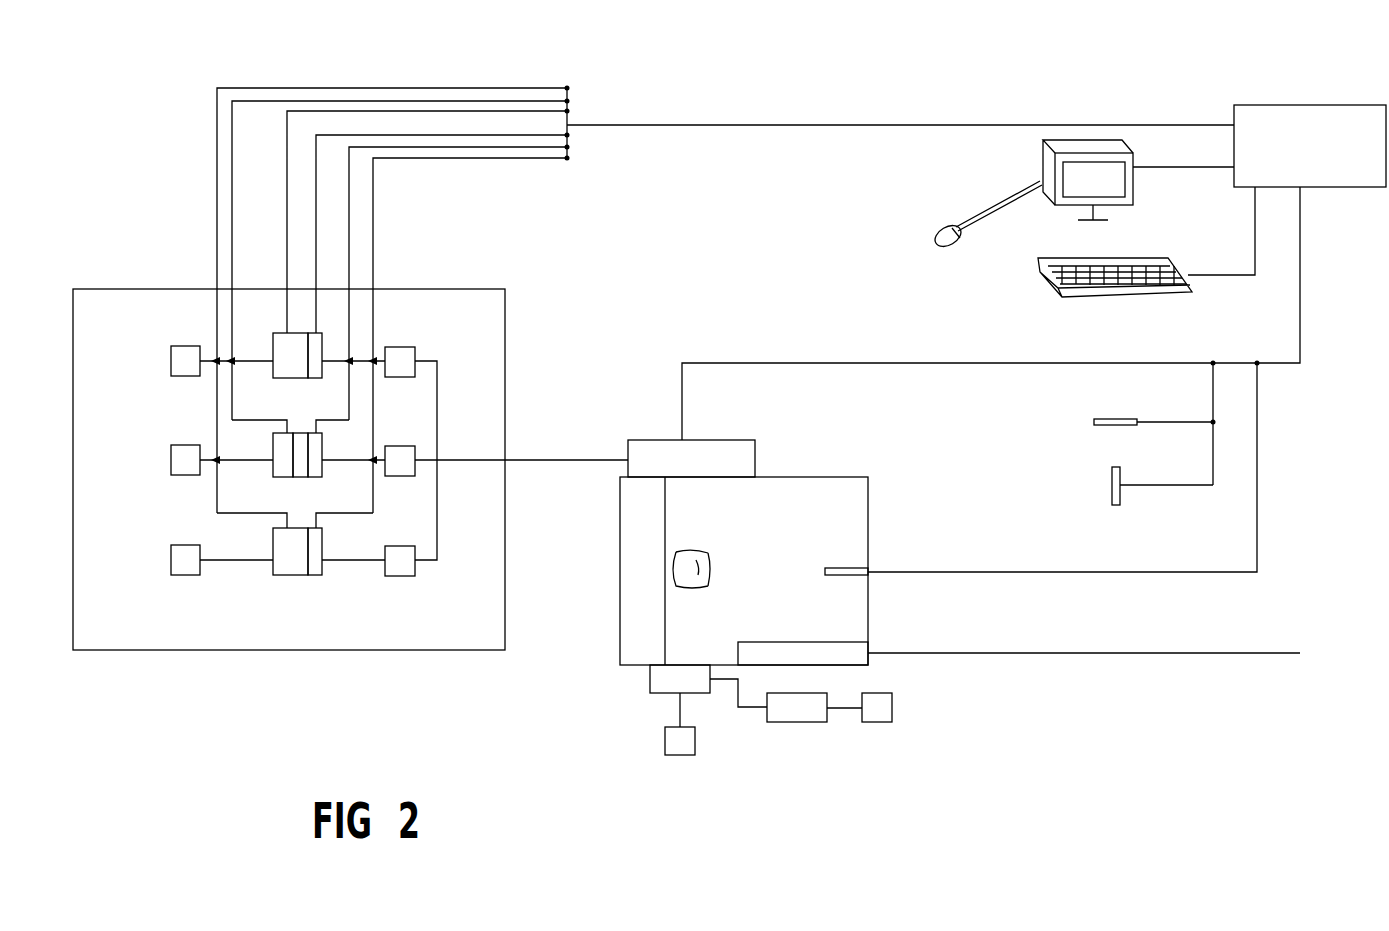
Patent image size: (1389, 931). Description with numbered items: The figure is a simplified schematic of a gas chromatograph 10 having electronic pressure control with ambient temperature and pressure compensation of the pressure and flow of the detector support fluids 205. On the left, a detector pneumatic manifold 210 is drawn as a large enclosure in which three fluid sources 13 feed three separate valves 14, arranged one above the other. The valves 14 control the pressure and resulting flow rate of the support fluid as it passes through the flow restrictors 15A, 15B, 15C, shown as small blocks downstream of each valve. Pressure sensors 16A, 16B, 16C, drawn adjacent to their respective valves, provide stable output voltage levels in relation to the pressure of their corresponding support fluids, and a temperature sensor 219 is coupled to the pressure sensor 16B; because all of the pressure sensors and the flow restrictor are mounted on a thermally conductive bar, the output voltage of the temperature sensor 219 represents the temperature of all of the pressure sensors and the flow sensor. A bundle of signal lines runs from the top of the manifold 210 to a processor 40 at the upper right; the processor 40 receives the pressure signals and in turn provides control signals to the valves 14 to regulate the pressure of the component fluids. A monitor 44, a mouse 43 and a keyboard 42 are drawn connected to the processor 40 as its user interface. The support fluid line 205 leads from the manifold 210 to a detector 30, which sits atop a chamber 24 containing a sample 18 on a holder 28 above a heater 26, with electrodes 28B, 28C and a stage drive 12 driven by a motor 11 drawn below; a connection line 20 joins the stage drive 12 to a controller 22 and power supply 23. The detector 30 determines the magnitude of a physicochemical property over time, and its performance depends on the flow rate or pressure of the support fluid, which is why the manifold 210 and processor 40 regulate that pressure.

The gas chromatograph 10 is at (888, 458).
The motor 11 is at (665, 740).
The stage drive 12 is at (650, 677).
The fluid sources 13 is at (171, 361).
The valves 14 is at (288, 379).
The flow restrictor 15A is at (415, 352).
The flow restrictor 15B is at (415, 476).
The flow restrictor 15C is at (403, 577).
The pressure sensor 16A is at (310, 379).
The pressure sensor 16B is at (315, 478).
The pressure sensor 16C is at (315, 576).
The sample 18 is at (705, 552).
The connection line 20 is at (735, 698).
The controller 22 is at (780, 723).
The power supply 23 is at (873, 723).
The chamber 24 is at (793, 477).
The heater 26 is at (848, 642).
The sample holder 28 is at (848, 568).
The electrode 28B is at (1100, 419).
The electrode 28C is at (1112, 482).
The detector 30 is at (693, 440).
The processor 40 is at (1285, 105).
The keyboard 42 is at (1048, 287).
The mouse 43 is at (935, 243).
The monitor 44 is at (1043, 155).
The detector support fluids 205 is at (540, 460).
The detector pneumatic manifold 210 is at (148, 289).
The temperature sensor 219 is at (300, 478).